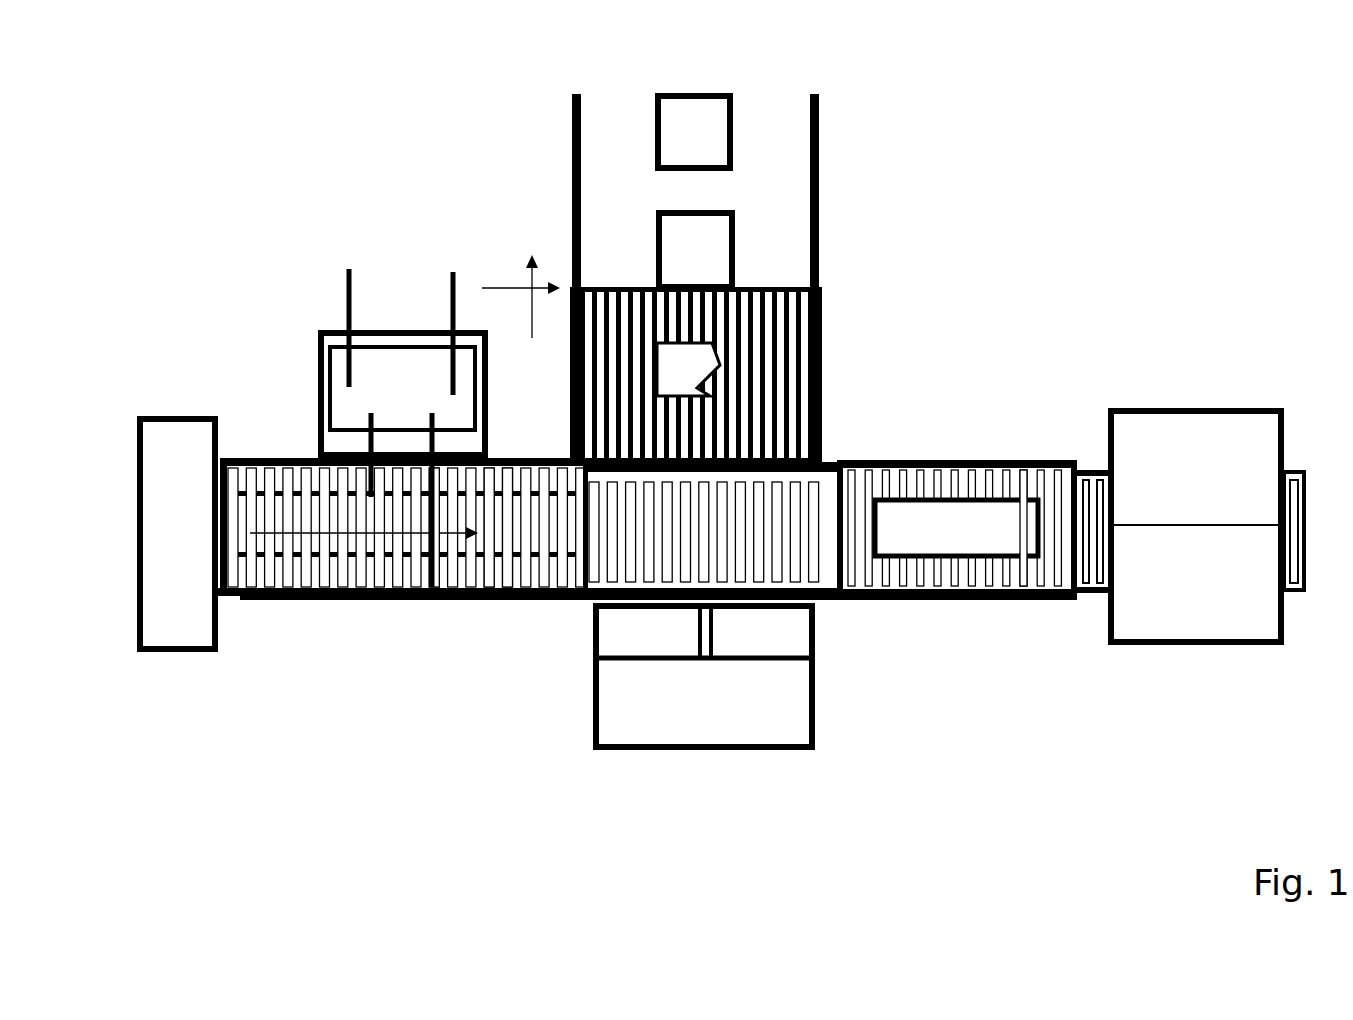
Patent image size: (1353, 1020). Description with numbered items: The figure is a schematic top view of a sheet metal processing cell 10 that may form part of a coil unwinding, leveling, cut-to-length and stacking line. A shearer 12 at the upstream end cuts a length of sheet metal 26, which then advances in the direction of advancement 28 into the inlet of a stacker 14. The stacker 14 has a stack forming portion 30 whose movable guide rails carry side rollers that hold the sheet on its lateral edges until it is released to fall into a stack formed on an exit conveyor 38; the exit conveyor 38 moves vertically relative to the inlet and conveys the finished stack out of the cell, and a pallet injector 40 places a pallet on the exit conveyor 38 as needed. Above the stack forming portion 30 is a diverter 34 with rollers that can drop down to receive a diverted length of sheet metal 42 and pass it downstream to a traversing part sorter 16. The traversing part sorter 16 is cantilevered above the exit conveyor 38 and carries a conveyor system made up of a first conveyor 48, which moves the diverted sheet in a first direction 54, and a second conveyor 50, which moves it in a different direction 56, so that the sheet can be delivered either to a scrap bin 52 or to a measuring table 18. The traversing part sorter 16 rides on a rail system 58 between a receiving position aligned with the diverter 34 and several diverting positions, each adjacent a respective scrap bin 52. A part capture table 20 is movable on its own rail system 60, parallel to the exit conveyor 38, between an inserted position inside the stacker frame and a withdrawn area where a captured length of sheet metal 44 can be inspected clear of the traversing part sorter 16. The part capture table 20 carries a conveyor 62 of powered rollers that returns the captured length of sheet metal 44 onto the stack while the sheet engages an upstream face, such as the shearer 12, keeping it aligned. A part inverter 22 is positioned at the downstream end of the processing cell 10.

The sheet metal processing cell 10 is at (172, 118).
The shearer 12 is at (172, 652).
The stacker 14 is at (406, 600).
The traversing part sorter 16 is at (782, 257).
The measuring table 18 is at (800, 750).
The part capture table 20 is at (972, 566).
The part inverter 22 is at (1228, 410).
The length of sheet metal 26 is at (275, 512).
The direction of advancement 28 is at (333, 600).
The stack forming portion 30 is at (497, 600).
The diverter 34 is at (433, 600).
The exit conveyor 38 is at (477, 626).
The pallet injector 40 is at (318, 330).
The diverted length of sheet metal 42 is at (706, 345).
The captured length of sheet metal 44 is at (981, 541).
The traversing part sorter first conveyor 48 is at (795, 325).
The traversing part sorter second conveyor 50 is at (772, 290).
The scrap bin 52 is at (731, 93).
The first direction 54 is at (504, 288).
The different direction 56 is at (532, 340).
The rail system 58 is at (819, 100).
The rail system 60 is at (853, 600).
The part capture table conveyor 62 is at (1018, 577).